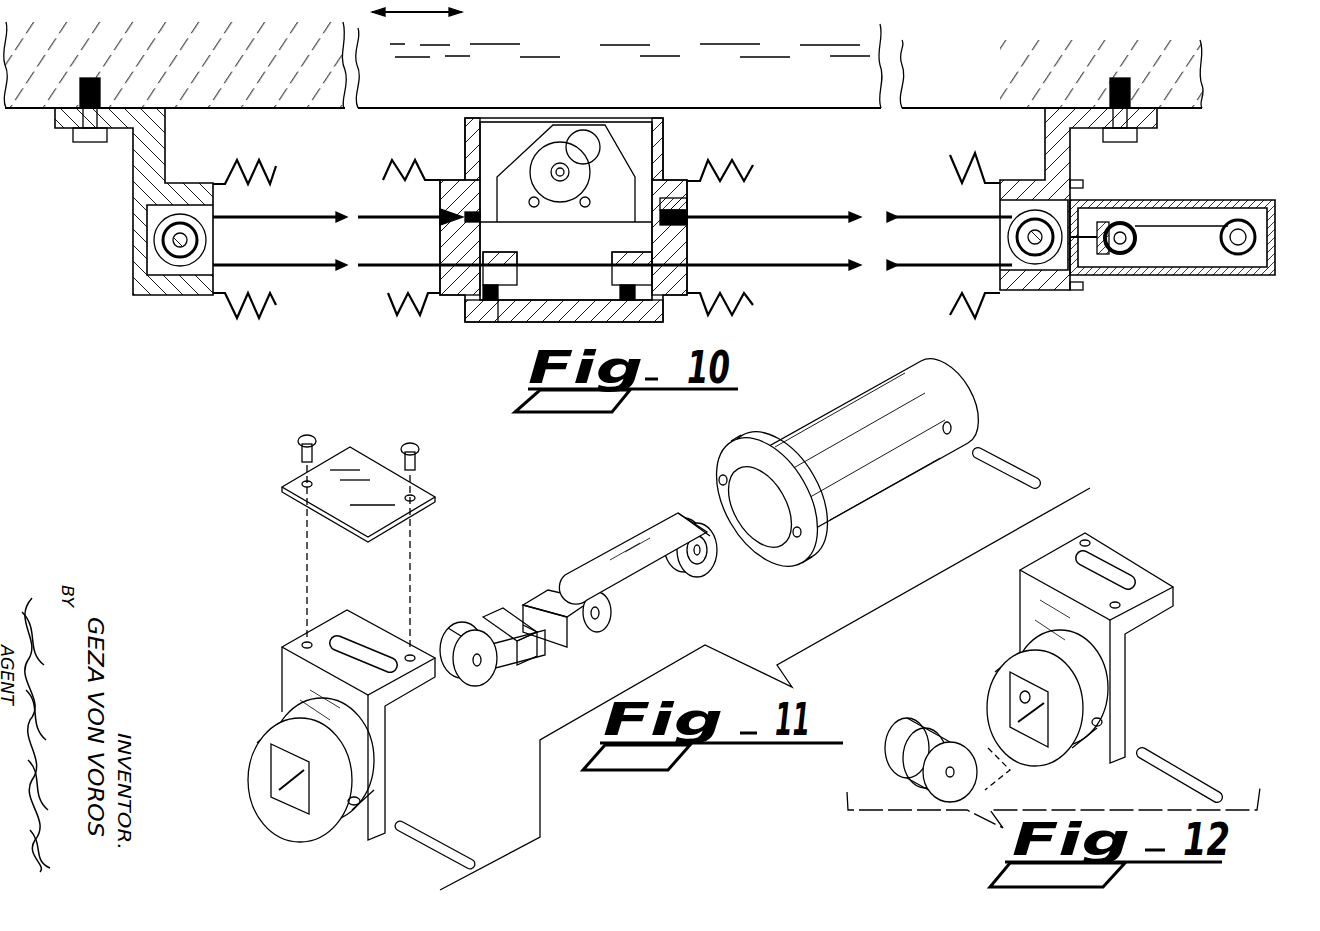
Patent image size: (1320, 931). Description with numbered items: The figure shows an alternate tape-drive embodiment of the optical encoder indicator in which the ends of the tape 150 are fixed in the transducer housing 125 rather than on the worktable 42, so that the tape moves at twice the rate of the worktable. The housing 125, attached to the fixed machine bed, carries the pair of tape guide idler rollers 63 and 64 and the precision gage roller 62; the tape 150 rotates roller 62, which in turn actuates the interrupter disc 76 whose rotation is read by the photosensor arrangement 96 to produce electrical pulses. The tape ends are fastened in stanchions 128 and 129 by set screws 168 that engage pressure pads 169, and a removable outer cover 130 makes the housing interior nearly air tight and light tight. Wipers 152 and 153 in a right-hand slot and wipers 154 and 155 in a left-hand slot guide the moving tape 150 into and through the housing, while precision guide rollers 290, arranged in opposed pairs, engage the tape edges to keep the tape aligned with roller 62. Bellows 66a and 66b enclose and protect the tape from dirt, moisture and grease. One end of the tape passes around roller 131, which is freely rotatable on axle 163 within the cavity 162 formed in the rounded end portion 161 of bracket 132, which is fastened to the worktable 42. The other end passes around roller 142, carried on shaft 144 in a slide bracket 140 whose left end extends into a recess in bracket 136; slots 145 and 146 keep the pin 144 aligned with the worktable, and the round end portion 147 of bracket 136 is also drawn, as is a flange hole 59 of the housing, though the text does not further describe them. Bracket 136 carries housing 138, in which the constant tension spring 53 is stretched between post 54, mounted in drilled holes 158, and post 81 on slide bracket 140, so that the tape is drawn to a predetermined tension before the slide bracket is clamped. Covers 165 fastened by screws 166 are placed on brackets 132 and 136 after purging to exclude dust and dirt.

In FIG. 10, the worktable 42 is at (262, 100).
In FIG. 10, the bracket 132 is at (140, 172).
In FIG. 12, the bracket 132 is at (1125, 566).
In FIG. 10, the roller 131 is at (190, 244).
In FIG. 12, the roller 131 is at (913, 745).
In FIG. 10, the axle or shaft 163 is at (176, 236).
In FIG. 12, the axle or shaft 163 is at (1172, 770).
In FIG. 10, the bellows 66b is at (267, 306).
In FIG. 10, the bellows 66a is at (978, 310).
In FIG. 10, the wiper 152 is at (692, 200).
In FIG. 10, the outer cover 130 is at (652, 320).
In FIG. 10, the tape guide idler roller 64 is at (658, 143).
In FIG. 10, the precision gage roller 62 is at (545, 132).
In FIG. 10, the interrupter disc 76 is at (553, 148).
In FIG. 10, the photosensor arrangement 96 is at (590, 132).
In FIG. 10, the tape guide idler roller 63 is at (508, 124).
In FIG. 10, the wiper 154 is at (440, 214).
In FIG. 10, the wiper 155 is at (447, 225).
In FIG. 10, the wiper 153 is at (690, 222).
In FIG. 10, the tape 150 is at (775, 217).
In FIG. 10, the pressure pad 169 is at (610, 269).
In FIG. 10, the stanchion or block 128 is at (506, 255).
In FIG. 10, the stanchion or block 129 is at (631, 244).
In FIG. 10, the precision guide roller 290 is at (668, 178).
In FIG. 10, the set screw 168 is at (490, 308).
In FIG. 10, the housing 125 is at (528, 310).
In FIG. 10, the bracket 136 is at (1158, 114).
In FIG. 11, the bracket 136 is at (372, 633).
In FIG. 10, the roller 142 is at (1012, 225).
In FIG. 11, the roller 142 is at (462, 651).
In FIG. 10, the shaft or axle 144 is at (1030, 240).
In FIG. 11, the shaft or axle 144 is at (428, 839).
In FIG. 10, the housing 138 is at (1146, 203).
In FIG. 11, the housing 138 is at (950, 412).
In FIG. 10, the constant tension spring 53 is at (1212, 216).
In FIG. 11, the constant tension spring 53 is at (595, 560).
In FIG. 10, the shaft or post 81 is at (1122, 253).
In FIG. 10, the slide bracket 140 is at (1106, 254).
In FIG. 11, the slide bracket 140 is at (580, 640).
In FIG. 10, the shaft or post 54 is at (1238, 220).
In FIG. 11, the shaft or post 54 is at (700, 566).
In FIG. 11, the cover 165 is at (350, 456).
In FIG. 11, the screw 166 is at (419, 451).
In FIG. 11, the disc 147 is at (266, 753).
In FIG. 11, the slot 145 is at (292, 758).
In FIG. 11, the slot 146 is at (358, 810).
In FIG. 11, the flange hole 59 is at (718, 481).
In FIG. 11, the drilled hole 158 is at (947, 436).
In FIG. 12, the rounded end portion 161 is at (1005, 668).
In FIG. 12, the cavity 162 is at (1019, 699).